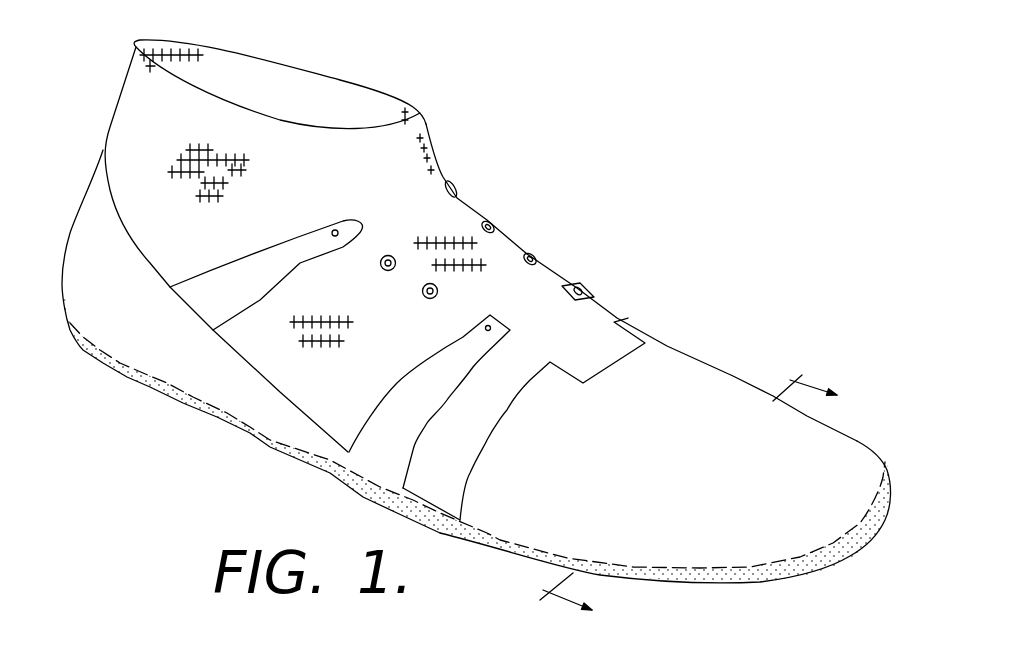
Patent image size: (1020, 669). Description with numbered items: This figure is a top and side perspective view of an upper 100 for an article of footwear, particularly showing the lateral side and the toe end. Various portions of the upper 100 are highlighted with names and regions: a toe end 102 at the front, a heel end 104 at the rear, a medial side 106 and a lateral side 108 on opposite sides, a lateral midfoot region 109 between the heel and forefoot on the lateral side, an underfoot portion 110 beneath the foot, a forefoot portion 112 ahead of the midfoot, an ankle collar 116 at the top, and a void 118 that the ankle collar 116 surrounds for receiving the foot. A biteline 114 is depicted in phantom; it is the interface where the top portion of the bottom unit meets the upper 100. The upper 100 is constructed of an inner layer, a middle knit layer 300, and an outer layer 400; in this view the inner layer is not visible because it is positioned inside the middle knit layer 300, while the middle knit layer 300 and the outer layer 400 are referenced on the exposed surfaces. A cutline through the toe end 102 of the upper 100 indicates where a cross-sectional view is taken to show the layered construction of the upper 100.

The upper 100 is at (603, 222).
The toe end 102 is at (815, 470).
The heel end 104 is at (110, 128).
The medial side 106 is at (613, 317).
The lateral side 108 is at (303, 372).
The lateral midfoot region 109 is at (397, 333).
The underfoot portion 110 is at (393, 522).
The forefoot portion 112 is at (517, 304).
The biteline 114 is at (873, 518).
The ankle collar 116 is at (215, 50).
The void 118 is at (263, 90).
The middle knit layer 300 is at (338, 193).
The outer layer 400 is at (262, 274).